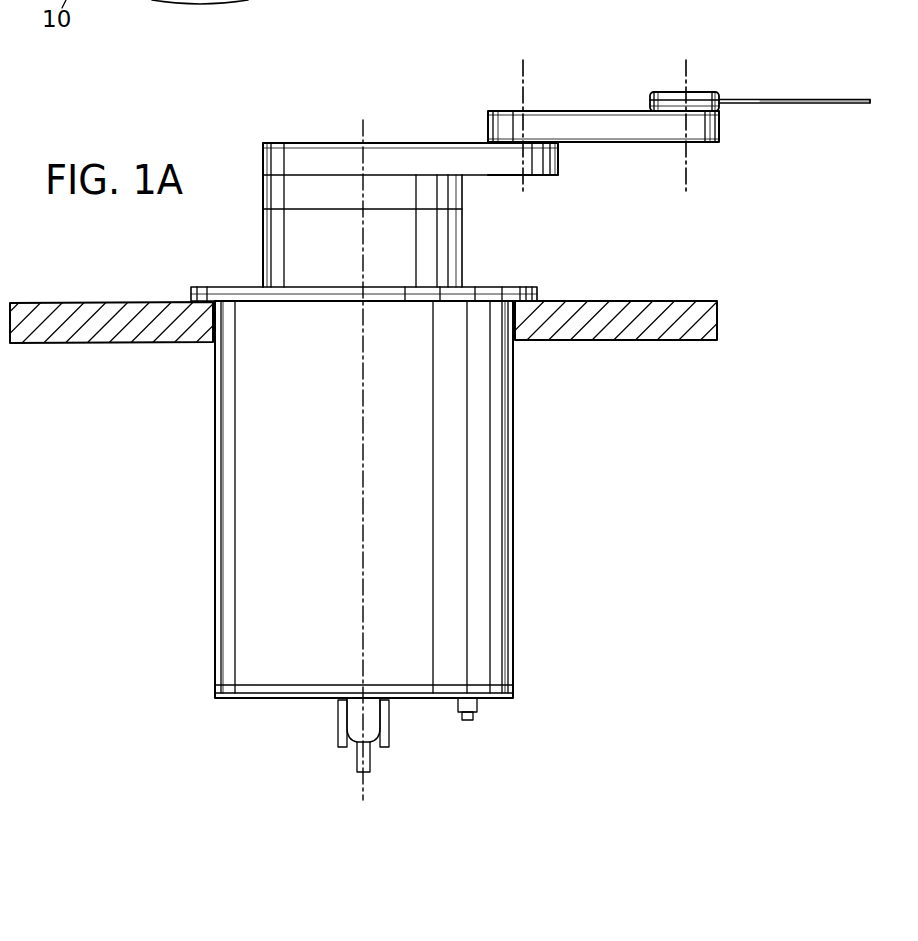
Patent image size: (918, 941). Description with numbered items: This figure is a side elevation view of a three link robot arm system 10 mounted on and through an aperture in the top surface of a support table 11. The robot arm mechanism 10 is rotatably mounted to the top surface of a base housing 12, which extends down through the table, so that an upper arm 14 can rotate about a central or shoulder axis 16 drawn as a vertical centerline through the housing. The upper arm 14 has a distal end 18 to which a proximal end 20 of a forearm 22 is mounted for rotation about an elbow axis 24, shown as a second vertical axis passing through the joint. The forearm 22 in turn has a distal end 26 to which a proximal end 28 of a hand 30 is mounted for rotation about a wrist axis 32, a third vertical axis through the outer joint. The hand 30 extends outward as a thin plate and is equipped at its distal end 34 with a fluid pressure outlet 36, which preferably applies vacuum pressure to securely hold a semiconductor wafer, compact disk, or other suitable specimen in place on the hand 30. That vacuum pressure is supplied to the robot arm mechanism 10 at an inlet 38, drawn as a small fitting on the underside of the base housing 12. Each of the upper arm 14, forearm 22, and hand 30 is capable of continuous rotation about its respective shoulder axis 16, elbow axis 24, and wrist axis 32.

The three link robot arm system 10 is at (161, 568).
The support table 11 is at (717, 318).
The base housing 12 is at (513, 520).
The upper arm 14 is at (263, 144).
The shoulder axis 16 is at (366, 114).
The distal end of upper arm 18 is at (558, 160).
The proximal end of forearm 20 is at (488, 132).
The forearm 22 is at (560, 111).
The elbow axis 24 is at (520, 65).
The distal end of forearm 26 is at (719, 128).
The proximal end of hand 28 is at (650, 100).
The hand 30 is at (783, 99).
The wrist axis 32 is at (683, 65).
The distal end of hand 34 is at (870, 104).
The fluid pressure outlet 36 is at (838, 99).
The inlet 38 is at (465, 722).